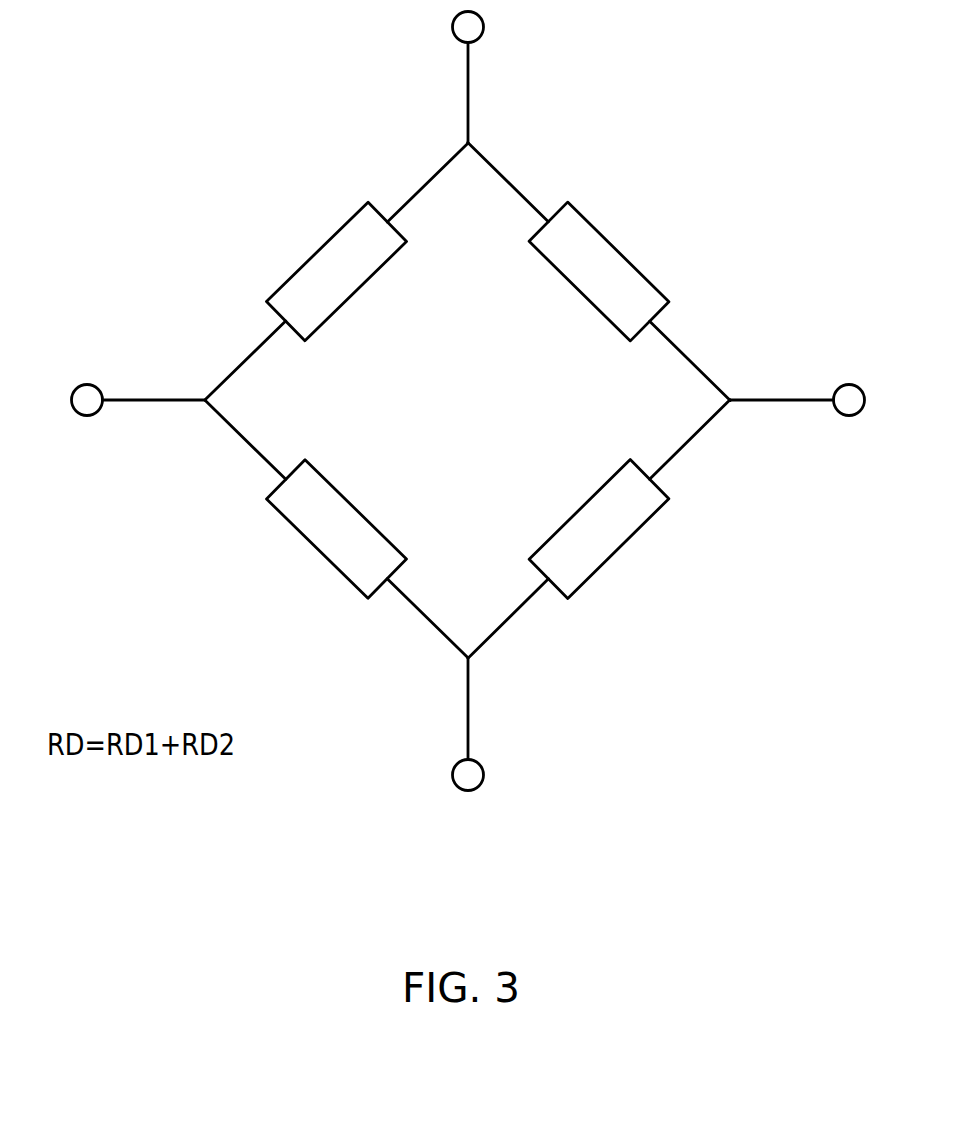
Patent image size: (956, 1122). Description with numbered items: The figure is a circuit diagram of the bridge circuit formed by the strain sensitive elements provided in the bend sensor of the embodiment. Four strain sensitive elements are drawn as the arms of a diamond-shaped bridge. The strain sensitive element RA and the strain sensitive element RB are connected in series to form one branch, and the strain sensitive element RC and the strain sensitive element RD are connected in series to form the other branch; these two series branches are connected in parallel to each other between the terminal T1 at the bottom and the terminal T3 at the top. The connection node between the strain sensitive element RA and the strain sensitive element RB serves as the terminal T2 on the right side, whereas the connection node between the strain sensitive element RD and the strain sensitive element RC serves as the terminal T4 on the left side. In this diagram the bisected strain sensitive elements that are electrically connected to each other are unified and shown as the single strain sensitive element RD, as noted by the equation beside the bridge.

The terminal T1 is at (494, 724).
The terminal T2 is at (797, 378).
The terminal T3 is at (494, 76).
The terminal T4 is at (137, 378).
The strain sensitive element RA is at (599, 529).
The strain sensitive element RB is at (598, 271).
The strain sensitive element RC is at (337, 271).
The strain sensitive element RD is at (336, 529).